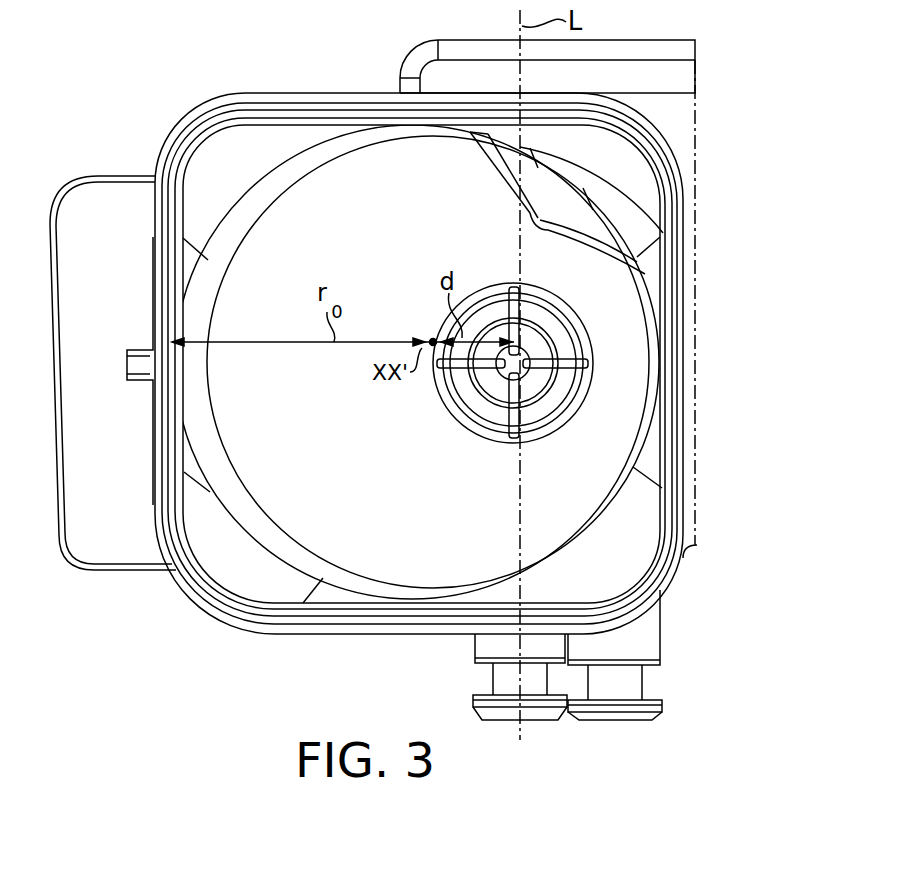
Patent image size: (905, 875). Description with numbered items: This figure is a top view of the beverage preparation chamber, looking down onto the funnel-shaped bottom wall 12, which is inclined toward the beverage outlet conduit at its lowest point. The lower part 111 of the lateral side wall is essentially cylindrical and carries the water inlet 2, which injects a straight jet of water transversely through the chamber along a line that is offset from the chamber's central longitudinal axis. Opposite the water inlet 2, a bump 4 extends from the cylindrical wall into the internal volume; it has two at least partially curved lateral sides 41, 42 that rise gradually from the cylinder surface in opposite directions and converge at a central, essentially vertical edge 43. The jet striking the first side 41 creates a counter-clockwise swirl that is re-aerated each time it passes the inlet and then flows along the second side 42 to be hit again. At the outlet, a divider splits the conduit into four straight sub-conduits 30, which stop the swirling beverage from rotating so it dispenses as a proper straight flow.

The lower part of the lateral side wall 111 is at (263, 205).
The bottom wall 12 is at (627, 435).
The bump 4 is at (593, 210).
The first side 41 is at (503, 193).
The second side 42 is at (596, 234).
The central common essentially vertical edge 43 is at (538, 228).
The straight sub-conduits 30 is at (543, 347).
The water inlet 2 is at (527, 723).